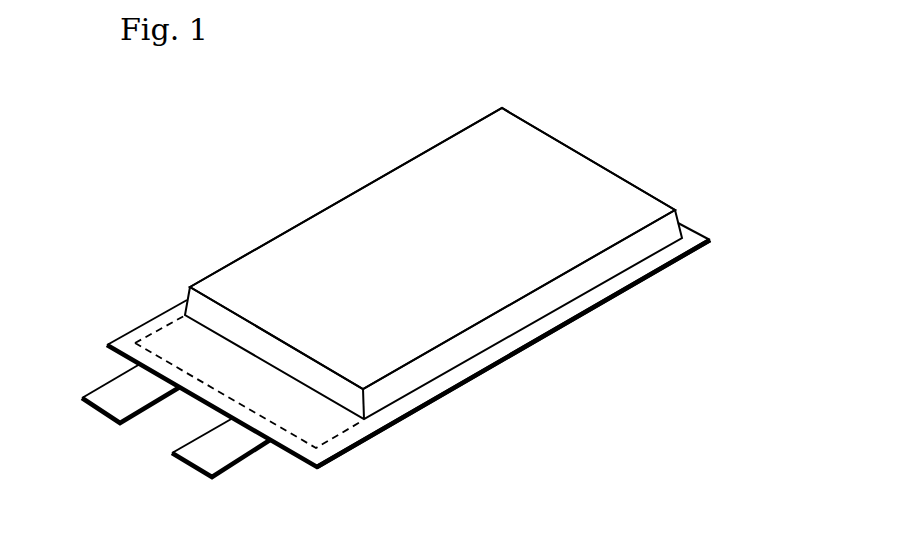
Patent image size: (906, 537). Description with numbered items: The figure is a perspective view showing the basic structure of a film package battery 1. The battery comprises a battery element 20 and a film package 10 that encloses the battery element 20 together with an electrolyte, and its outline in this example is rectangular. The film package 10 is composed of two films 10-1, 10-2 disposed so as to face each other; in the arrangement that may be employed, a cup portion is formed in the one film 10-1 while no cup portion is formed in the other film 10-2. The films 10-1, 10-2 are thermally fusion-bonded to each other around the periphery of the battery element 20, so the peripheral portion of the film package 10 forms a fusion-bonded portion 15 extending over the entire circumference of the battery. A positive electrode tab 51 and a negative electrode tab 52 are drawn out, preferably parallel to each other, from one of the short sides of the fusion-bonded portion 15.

The film package battery 1 is at (208, 135).
The film package 10 is at (742, 147).
The film 10-1 is at (643, 204).
The film 10-2 is at (660, 272).
The fusion-bonded portion 15 is at (508, 346).
The battery element 20 is at (390, 210).
The positive electrode tab 51 is at (94, 400).
The negative electrode tab 52 is at (184, 455).